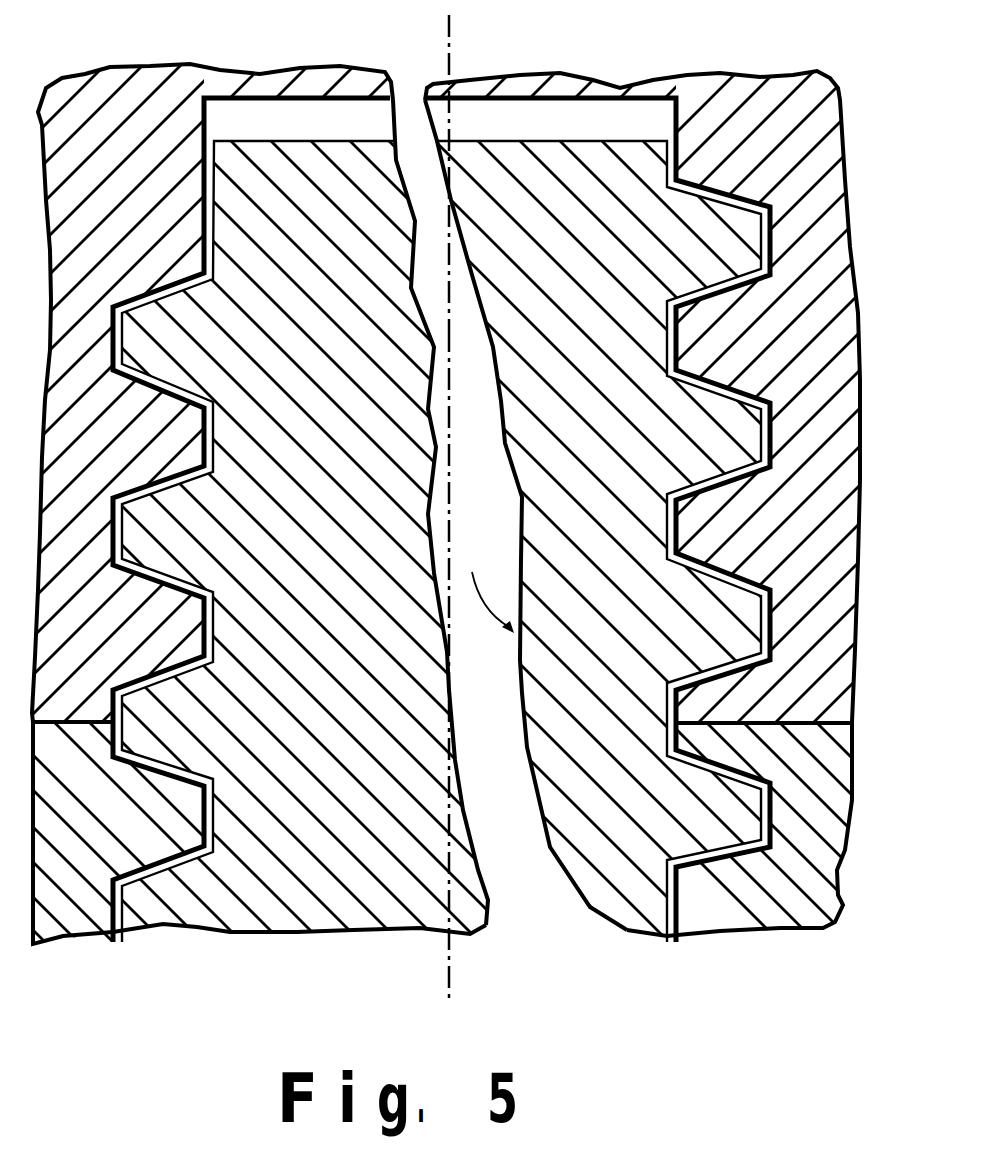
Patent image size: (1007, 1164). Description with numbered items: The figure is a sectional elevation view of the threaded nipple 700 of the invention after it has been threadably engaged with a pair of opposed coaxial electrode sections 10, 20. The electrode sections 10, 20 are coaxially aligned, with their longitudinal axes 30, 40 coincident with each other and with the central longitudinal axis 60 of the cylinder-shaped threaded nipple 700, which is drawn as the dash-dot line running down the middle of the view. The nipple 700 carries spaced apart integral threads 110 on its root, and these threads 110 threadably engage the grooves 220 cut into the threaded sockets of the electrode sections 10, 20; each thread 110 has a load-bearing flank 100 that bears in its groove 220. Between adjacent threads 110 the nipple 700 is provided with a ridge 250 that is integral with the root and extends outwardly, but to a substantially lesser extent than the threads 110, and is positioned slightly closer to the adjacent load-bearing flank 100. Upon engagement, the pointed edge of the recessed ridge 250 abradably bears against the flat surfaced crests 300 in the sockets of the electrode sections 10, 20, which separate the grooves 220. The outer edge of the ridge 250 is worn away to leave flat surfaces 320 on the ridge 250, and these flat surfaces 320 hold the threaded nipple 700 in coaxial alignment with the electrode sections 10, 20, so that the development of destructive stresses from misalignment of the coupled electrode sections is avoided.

The electrode section 10 is at (848, 227).
The electrode section 20 is at (760, 893).
The longitudinal axis 30 is at (451, 32).
The longitudinal axis 40 is at (447, 990).
The central longitudinal axis 60 is at (450, 50).
The load-bearing flank 100 is at (145, 345).
The thread 110 is at (175, 330).
The groove 220 is at (800, 198).
The ridge 250 is at (214, 248).
The flat surfaced crest 300 is at (197, 453).
The flat surface 320 is at (207, 232).
The threaded nipple 700 is at (483, 586).